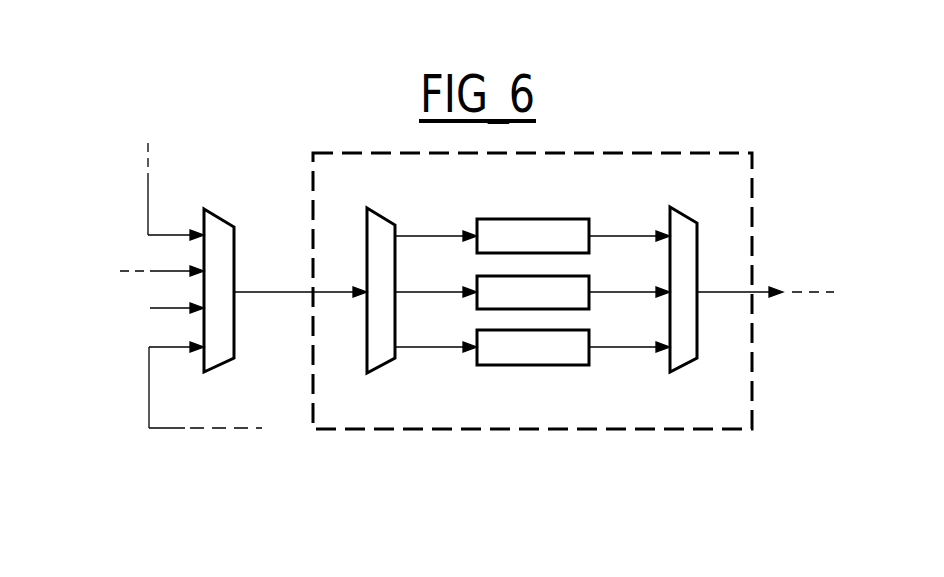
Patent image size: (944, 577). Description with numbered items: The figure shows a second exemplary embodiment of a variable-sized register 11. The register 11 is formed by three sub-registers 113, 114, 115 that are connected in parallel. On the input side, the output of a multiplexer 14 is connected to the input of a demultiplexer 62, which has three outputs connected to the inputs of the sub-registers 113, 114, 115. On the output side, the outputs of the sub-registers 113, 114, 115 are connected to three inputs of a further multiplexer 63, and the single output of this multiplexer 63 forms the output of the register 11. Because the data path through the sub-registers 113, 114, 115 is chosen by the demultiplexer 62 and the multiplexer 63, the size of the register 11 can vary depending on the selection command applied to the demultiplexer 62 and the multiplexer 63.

The multiplexer 14 is at (215, 212).
The register 11 is at (641, 431).
The demultiplexer 62 is at (390, 368).
The multiplexer 63 is at (688, 368).
The sub-register 113 is at (553, 246).
The sub-register 114 is at (553, 304).
The sub-register 115 is at (553, 358).